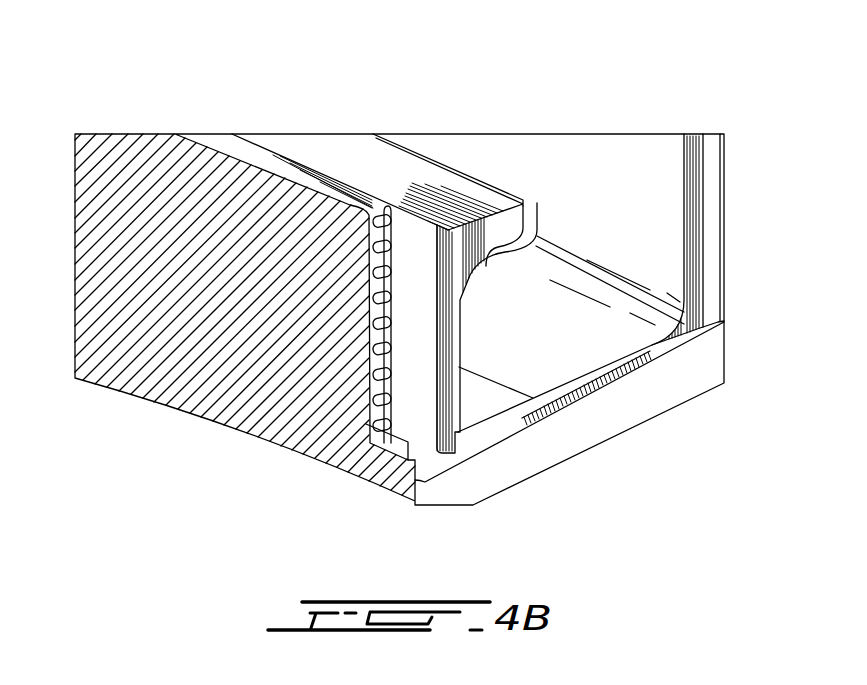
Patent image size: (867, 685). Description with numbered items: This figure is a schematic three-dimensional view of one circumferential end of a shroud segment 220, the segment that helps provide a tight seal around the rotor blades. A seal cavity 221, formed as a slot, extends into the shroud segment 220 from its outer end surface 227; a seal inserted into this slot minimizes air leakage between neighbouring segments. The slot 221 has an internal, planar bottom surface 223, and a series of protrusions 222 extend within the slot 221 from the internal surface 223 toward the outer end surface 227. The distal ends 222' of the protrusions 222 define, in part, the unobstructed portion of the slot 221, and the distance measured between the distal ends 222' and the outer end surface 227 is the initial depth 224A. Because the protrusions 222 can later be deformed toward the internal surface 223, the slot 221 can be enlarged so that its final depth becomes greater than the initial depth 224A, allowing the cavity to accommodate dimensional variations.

The shroud segment 220 is at (266, 126).
The seal cavity 221 is at (408, 219).
The protrusions 222 is at (365, 257).
The distal ends of the protrusions 222' is at (383, 484).
The internal bottom surface 223 is at (387, 385).
The initial depth 224A is at (393, 324).
The outer end surface 227 is at (467, 248).